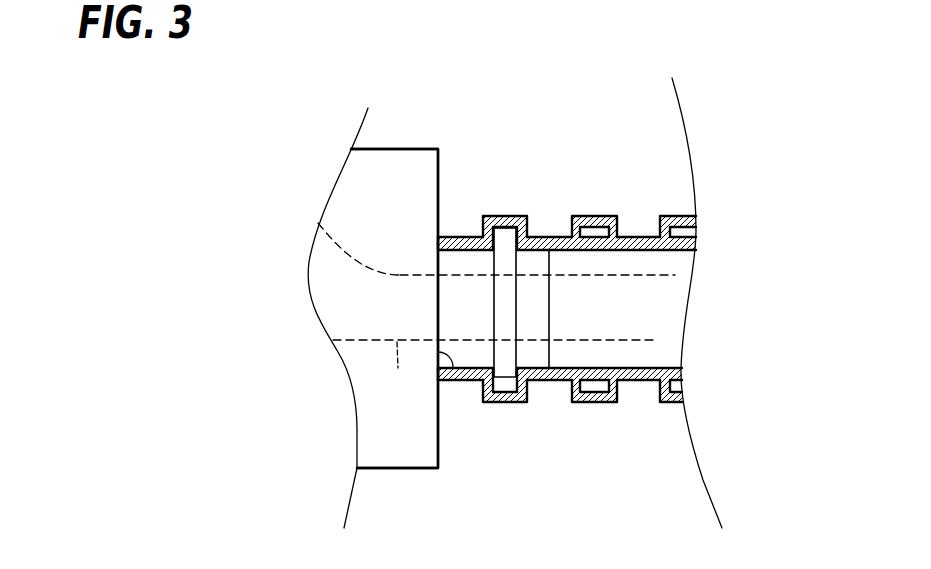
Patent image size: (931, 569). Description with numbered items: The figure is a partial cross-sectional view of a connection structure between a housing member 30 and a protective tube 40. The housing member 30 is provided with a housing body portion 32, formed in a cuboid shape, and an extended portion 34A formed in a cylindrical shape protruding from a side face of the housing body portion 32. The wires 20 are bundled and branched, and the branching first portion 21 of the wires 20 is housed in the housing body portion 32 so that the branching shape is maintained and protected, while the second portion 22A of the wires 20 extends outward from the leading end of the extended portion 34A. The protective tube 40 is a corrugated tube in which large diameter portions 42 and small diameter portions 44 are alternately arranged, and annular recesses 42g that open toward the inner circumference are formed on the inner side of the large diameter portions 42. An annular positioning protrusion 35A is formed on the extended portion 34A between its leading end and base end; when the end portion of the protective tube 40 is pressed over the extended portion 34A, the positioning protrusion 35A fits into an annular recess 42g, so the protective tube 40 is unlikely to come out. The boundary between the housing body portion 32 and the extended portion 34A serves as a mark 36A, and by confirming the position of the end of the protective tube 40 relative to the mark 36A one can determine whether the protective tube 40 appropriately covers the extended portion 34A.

The wires 20 is at (657, 340).
The first portion 21 is at (395, 372).
The second portion 22A is at (672, 275).
The housing member 30 is at (373, 481).
The housing body portion 32 is at (425, 469).
The extended portion 34A is at (550, 321).
The positioning protrusion 35A is at (518, 293).
The mark 36A is at (453, 383).
The protective tube 40 is at (668, 213).
The large diameter portion 42 is at (593, 215).
The annular recess 42g is at (500, 392).
The small diameter portion 44 is at (638, 385).